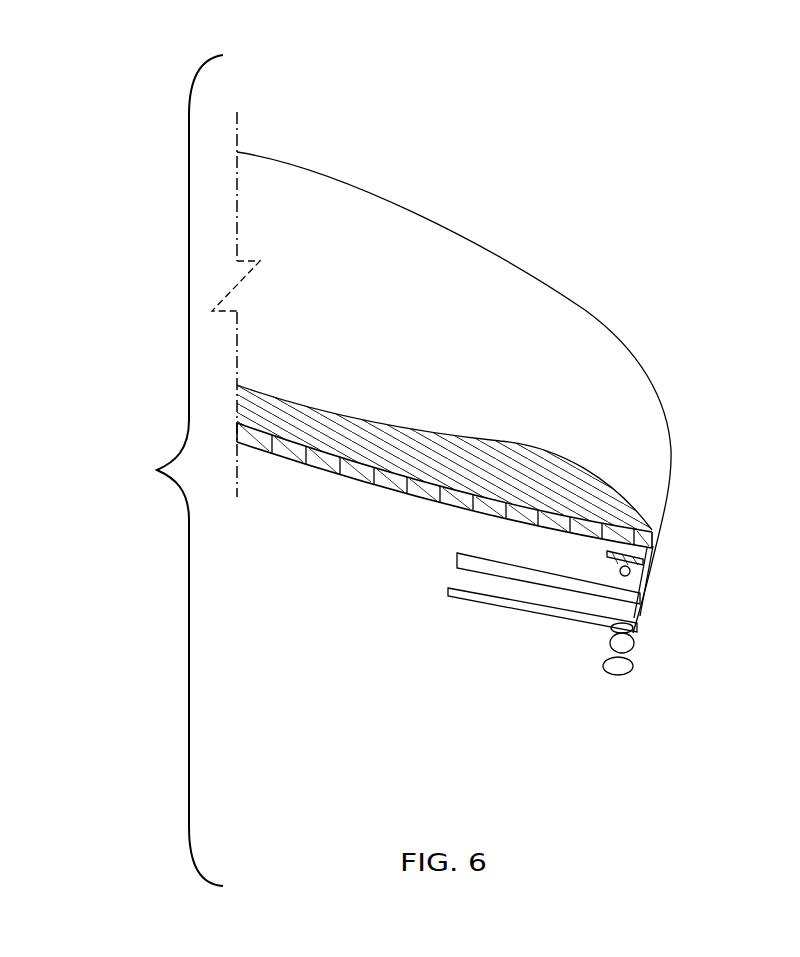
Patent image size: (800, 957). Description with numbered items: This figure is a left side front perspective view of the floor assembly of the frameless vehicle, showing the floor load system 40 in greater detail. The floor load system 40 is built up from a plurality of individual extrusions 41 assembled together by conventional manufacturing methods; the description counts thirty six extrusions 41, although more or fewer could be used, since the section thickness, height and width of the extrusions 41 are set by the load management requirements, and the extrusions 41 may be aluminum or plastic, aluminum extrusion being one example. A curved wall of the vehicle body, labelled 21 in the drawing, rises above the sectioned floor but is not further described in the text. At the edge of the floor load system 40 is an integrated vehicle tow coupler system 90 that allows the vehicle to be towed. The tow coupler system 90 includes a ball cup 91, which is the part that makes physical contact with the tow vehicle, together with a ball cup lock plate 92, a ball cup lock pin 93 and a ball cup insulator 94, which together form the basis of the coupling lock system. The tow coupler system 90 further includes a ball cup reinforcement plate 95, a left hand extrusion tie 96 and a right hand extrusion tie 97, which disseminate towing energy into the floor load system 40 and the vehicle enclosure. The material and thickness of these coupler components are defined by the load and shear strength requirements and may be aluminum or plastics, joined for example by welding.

The floor load system 40 is at (172, 470).
The individual extrusions 41 is at (380, 487).
The bowl wall 21 is at (515, 392).
The integrated vehicle tow coupler system 90 is at (589, 646).
The ball cup 91 is at (616, 731).
The ball cup lock plate 92 is at (643, 577).
The ball cup lock pin 93 is at (643, 552).
The ball cup insulator 94 is at (633, 647).
The ball cup reinforcement plate 95 is at (578, 620).
The left hand extrusion tie 96 is at (648, 588).
The right hand extrusion tie 97 is at (537, 583).